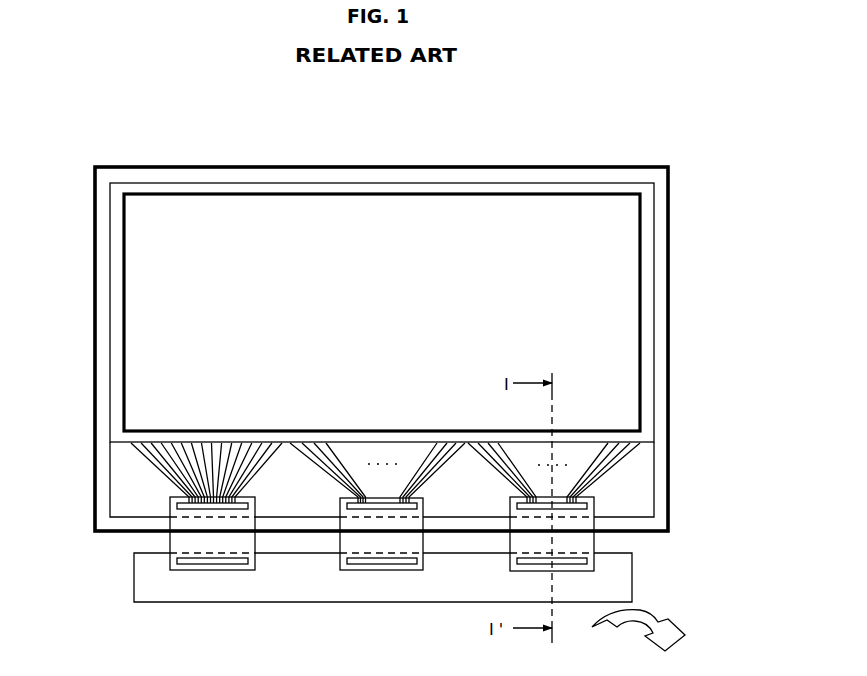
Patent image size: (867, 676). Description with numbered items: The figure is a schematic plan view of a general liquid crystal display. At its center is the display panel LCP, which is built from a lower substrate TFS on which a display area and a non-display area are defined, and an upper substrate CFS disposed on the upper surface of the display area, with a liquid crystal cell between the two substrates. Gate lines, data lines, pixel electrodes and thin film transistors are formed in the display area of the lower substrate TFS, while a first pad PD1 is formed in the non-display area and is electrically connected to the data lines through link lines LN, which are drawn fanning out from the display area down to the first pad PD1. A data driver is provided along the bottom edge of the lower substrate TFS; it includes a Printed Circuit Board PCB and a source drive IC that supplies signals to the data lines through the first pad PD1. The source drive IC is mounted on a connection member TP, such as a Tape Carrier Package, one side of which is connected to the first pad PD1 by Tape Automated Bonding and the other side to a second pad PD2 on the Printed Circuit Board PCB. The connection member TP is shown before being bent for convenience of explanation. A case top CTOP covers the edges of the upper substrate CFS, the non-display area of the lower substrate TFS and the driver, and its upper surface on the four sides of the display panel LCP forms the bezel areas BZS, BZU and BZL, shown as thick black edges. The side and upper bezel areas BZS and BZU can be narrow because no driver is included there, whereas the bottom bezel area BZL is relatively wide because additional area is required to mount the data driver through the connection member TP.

The case top CTOP is at (640, 312).
The upper substrate CFS is at (654, 349).
The lower substrate TFS is at (654, 444).
The display panel LCP is at (724, 333).
The link lines LN is at (618, 467).
The connection member TP is at (595, 545).
The first pad PD1 is at (595, 503).
The second pad PD2 is at (595, 559).
The Printed Circuit Board PCB is at (134, 577).
The bezel area BZS is at (668, 200).
The bezel area BZU is at (640, 167).
The bezel area BZL is at (112, 531).